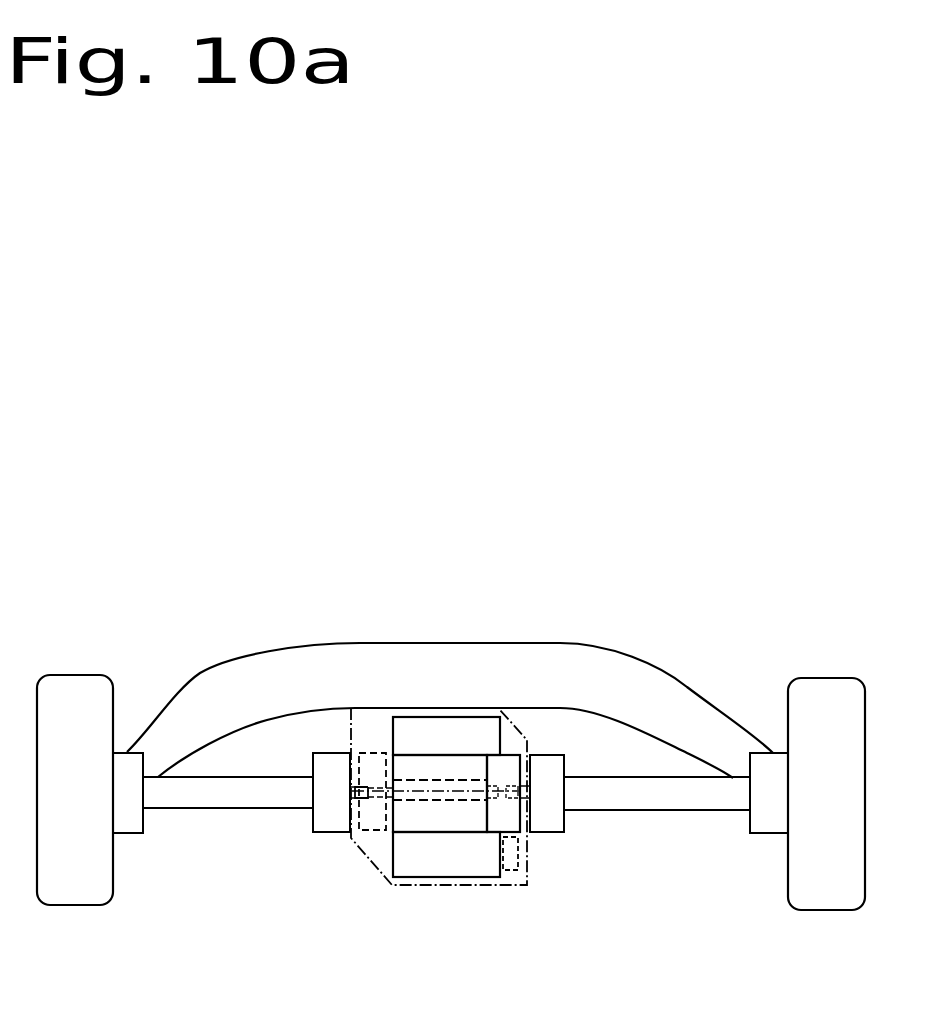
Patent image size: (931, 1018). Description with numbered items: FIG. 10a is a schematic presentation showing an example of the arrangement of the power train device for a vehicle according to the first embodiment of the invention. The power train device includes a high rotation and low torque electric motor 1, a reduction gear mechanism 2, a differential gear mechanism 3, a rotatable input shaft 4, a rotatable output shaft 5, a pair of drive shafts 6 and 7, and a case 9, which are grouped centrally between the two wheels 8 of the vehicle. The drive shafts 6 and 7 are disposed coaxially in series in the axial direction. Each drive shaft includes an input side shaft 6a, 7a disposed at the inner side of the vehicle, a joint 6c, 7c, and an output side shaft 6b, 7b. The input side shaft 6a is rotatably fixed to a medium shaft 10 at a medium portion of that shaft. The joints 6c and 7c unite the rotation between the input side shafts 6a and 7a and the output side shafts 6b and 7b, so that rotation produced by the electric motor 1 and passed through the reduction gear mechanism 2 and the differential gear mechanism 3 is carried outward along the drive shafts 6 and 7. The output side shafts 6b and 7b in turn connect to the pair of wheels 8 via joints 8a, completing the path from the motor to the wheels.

The electric motor 1 is at (472, 723).
The reduction gear mechanism 2 is at (447, 737).
The differential gear mechanism 3 is at (512, 763).
The input shaft 4 is at (418, 805).
The output shaft 5 is at (475, 807).
The drive shaft 6 is at (262, 769).
The input side shaft 6a is at (367, 790).
The output side shaft 6b is at (205, 800).
The joint 6c is at (325, 823).
The drive shaft 7 is at (617, 818).
The input side shaft 7a is at (520, 790).
The output side shaft 7b is at (677, 788).
The joint 7c is at (550, 822).
The wheel 8 is at (70, 890).
The joint 8a is at (130, 823).
The case 9 is at (437, 888).
The medium shaft 10 is at (410, 790).